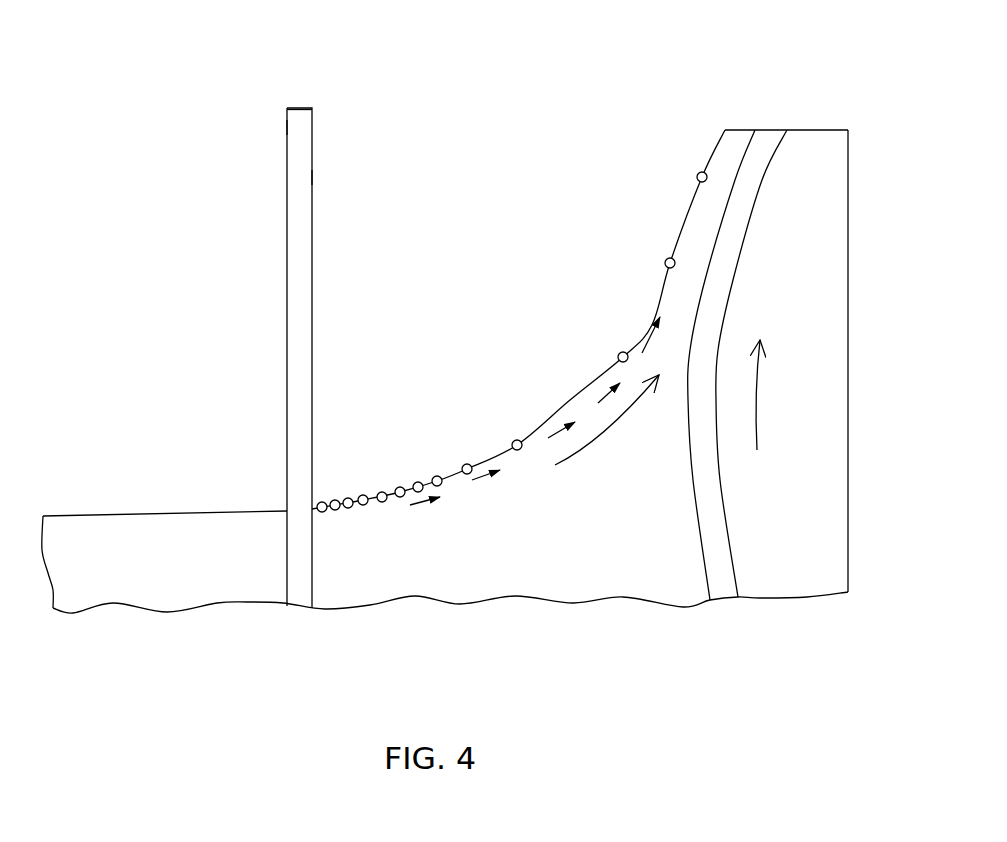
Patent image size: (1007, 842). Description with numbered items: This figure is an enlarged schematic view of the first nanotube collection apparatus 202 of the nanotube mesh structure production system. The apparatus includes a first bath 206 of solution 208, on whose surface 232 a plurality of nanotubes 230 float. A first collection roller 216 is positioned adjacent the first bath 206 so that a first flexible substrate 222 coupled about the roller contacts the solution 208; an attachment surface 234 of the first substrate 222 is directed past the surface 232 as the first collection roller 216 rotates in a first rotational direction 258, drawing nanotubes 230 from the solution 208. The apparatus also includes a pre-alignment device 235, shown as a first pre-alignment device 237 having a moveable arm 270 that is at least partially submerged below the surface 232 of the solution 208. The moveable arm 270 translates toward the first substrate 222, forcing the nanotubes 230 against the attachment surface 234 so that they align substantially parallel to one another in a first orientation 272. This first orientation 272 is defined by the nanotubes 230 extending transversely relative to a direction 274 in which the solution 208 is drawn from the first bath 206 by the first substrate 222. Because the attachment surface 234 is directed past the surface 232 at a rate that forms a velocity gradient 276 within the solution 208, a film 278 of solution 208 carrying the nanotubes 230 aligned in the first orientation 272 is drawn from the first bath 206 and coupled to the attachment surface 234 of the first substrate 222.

The first nanotube collection apparatus 202 is at (662, 40).
The first bath 206 is at (186, 176).
The solution 208 is at (513, 560).
The first collection roller 216 is at (815, 249).
The first flexible substrate 222 is at (713, 555).
The nanotubes 230 is at (437, 477).
The surface 232 is at (128, 516).
The attachment surface 234 is at (691, 533).
The pre-alignment device 235 is at (337, 101).
The first pre-alignment device 237 is at (287, 126).
The first rotational direction 258 is at (760, 393).
The moveable arm 270 is at (303, 177).
The first orientation 272 is at (385, 470).
The direction 274 is at (622, 423).
The velocity gradient 276 is at (599, 400).
The film 278 is at (732, 135).